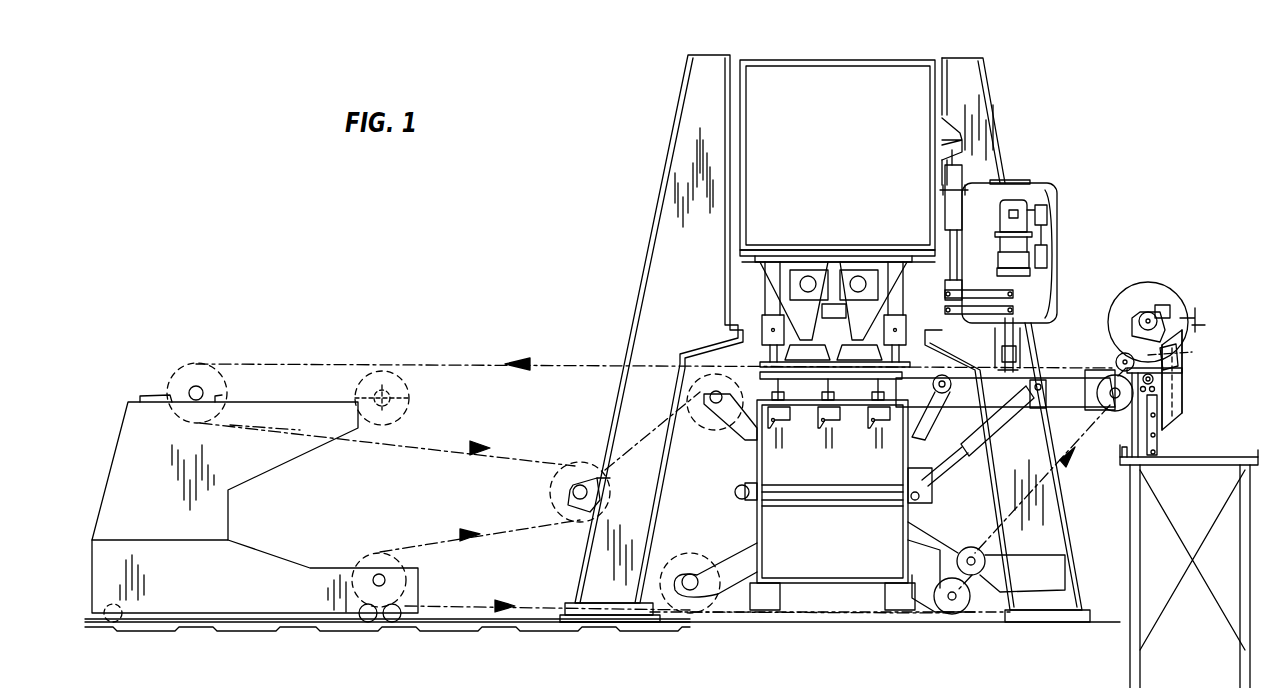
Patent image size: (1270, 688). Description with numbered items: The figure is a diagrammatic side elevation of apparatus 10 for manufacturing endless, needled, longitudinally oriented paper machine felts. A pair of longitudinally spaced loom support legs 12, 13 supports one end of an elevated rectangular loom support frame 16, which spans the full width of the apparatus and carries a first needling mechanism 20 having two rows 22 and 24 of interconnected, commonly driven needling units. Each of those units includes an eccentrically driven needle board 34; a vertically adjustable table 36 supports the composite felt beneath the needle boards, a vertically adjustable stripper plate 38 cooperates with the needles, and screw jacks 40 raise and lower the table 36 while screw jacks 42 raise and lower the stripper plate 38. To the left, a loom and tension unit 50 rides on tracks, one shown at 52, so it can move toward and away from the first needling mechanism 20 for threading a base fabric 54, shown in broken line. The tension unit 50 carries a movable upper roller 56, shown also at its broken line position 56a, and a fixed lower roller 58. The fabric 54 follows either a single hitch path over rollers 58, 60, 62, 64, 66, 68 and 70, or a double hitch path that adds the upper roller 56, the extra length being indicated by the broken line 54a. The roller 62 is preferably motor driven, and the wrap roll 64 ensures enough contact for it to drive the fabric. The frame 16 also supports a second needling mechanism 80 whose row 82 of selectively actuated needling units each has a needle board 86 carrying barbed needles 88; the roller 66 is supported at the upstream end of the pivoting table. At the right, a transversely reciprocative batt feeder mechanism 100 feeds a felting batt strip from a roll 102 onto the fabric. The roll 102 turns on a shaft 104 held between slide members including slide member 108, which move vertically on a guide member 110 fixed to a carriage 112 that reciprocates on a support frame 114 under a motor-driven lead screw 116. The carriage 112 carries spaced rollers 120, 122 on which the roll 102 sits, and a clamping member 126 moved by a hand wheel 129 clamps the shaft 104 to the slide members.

The apparatus 10 is at (640, 162).
The loom support leg 12 is at (658, 250).
The loom support leg 13 is at (972, 82).
The loom support frame 16 is at (808, 56).
The first needling mechanism 20 is at (718, 307).
The needling row 22 is at (855, 268).
The needling row 24 is at (800, 268).
The needle board 34 is at (818, 356).
The table 36 is at (826, 374).
The stripper plate 38 is at (768, 347).
The screw jacks 40 is at (788, 425).
The screw jacks 42 is at (768, 332).
The loom and tension unit 50 is at (104, 443).
The track 52 is at (452, 622).
The base fabric 54 is at (645, 440).
The extra length of double hitch path 54a is at (345, 360).
The upper roller 56 is at (186, 378).
The broken line position of upper roller 56a is at (415, 386).
The lower roller 58 is at (368, 560).
The roller 60 is at (690, 566).
The roller 62 is at (955, 605).
The wrap roll 64 is at (962, 548).
The roller 66 is at (1108, 403).
The roller 68 is at (718, 420).
The roller 70 is at (560, 486).
The second needling mechanism 80 is at (1020, 190).
The needling row 82 is at (997, 213).
The needle board 86 is at (1018, 350).
The barbed needles 88 is at (1012, 372).
The batt let-off or feeder mechanism 100 is at (1205, 297).
The roll of felting batt 102 is at (1160, 284).
The shaft 104 is at (1143, 316).
The slide member 108 is at (1180, 403).
The guide member 110 is at (1162, 434).
The carriage 112 is at (1175, 352).
The support track or frame 114 is at (1122, 452).
The lead screw 116 is at (1155, 380).
The roller 120 is at (1118, 362).
The roller 122 is at (1182, 358).
The clamping member 126 is at (1166, 304).
The hand wheel 129 is at (1198, 320).